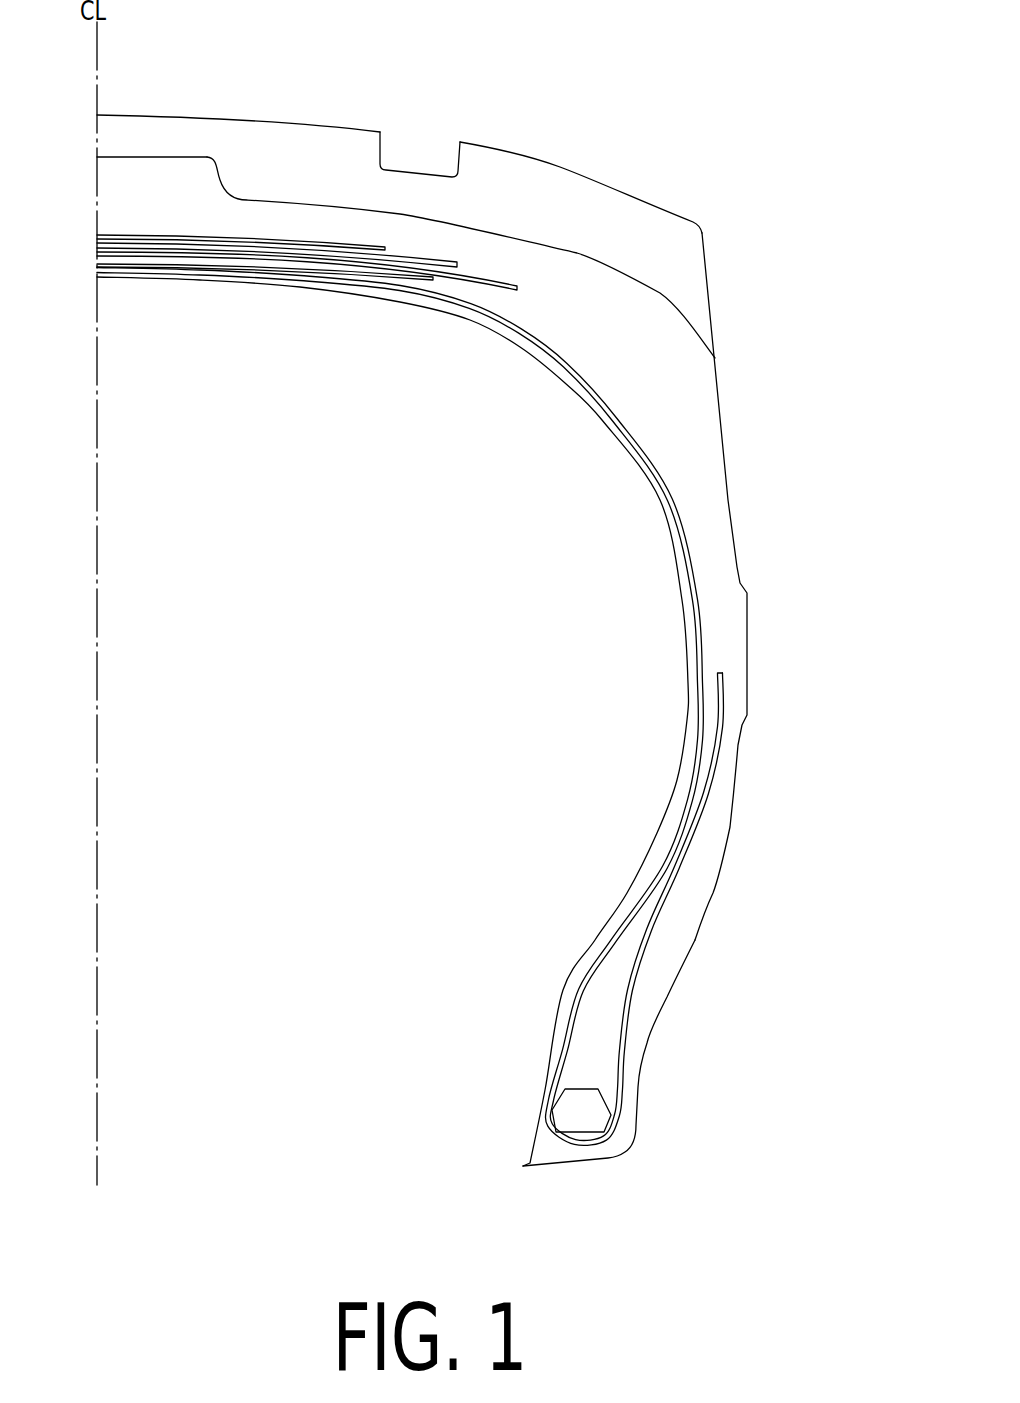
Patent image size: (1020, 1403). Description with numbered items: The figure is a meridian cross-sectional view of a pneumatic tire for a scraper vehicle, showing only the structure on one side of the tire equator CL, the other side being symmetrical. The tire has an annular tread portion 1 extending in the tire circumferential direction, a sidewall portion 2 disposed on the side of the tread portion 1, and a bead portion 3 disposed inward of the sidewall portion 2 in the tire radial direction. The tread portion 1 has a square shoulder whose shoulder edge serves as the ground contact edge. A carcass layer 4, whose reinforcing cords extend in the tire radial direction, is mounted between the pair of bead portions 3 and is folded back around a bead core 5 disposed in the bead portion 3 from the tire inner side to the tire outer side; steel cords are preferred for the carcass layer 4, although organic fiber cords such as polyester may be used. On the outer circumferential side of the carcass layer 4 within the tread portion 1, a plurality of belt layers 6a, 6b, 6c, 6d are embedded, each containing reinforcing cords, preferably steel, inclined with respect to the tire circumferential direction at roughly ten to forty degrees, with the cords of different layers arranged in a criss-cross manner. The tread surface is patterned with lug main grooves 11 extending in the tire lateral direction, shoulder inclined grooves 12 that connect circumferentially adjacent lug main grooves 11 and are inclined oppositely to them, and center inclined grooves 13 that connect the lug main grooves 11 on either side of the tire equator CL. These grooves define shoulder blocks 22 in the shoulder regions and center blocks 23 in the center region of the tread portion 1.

The tread portion 1 is at (560, 167).
The sidewall portion 2 is at (727, 487).
The bead portion 3 is at (638, 1087).
The carcass layer 4 is at (643, 457).
The bead core 5 is at (565, 1106).
The belt layer 6a is at (413, 277).
The belt layer 6b is at (503, 292).
The belt layer 6c is at (447, 267).
The belt layer 6d is at (360, 250).
The lug main groove 11 is at (577, 253).
The shoulder inclined groove 12 is at (392, 152).
The center inclined groove 13 is at (132, 155).
The shoulder block 22 is at (503, 167).
The center block 23 is at (272, 128).